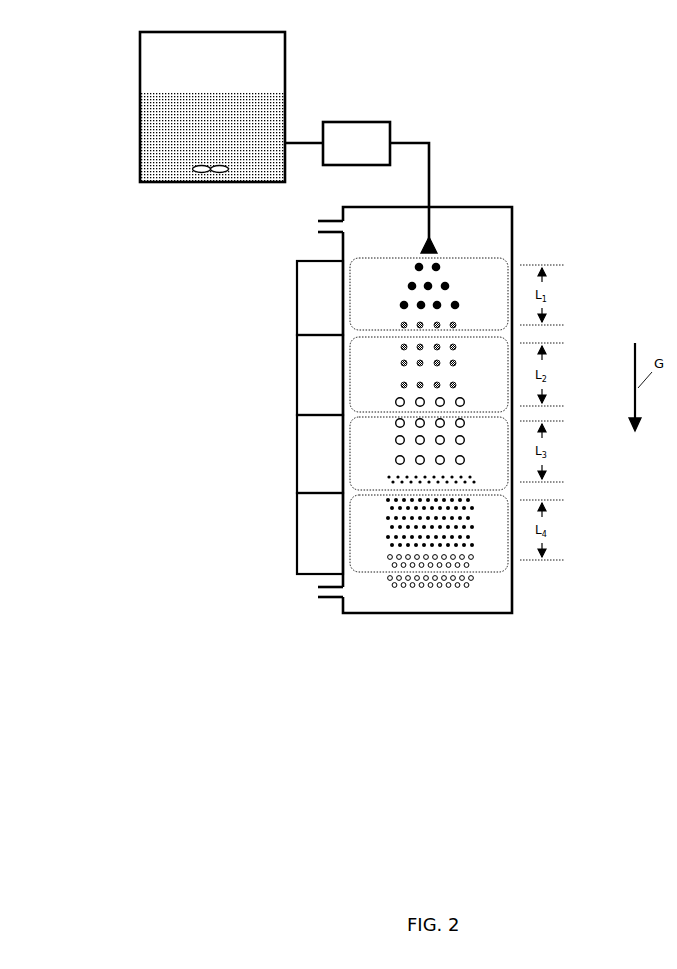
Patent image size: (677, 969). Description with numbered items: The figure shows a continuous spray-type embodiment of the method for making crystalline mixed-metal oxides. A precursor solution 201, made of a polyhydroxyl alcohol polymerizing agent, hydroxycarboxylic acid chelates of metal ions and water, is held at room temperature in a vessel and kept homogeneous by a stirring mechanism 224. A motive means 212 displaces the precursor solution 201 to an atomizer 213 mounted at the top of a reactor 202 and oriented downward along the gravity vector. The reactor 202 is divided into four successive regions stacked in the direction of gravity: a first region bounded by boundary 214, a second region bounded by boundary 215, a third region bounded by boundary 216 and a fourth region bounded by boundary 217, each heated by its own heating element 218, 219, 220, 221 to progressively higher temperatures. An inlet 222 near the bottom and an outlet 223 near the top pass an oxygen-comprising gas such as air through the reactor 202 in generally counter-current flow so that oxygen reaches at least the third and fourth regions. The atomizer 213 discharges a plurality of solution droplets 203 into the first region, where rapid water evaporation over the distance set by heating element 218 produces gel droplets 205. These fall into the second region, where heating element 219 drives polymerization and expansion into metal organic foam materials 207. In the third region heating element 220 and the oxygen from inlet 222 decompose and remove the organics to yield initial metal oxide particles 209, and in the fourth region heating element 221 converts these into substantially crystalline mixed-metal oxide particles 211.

The precursor solution 201 is at (163, 131).
The stirring mechanism 224 is at (221, 165).
The motive means 212 is at (356, 143).
The atomizer 213 is at (437, 250).
The reactor 202 is at (514, 226).
The outlet 223 is at (326, 220).
The inlet 222 is at (330, 600).
The heating element 218 is at (320, 298).
The heating element 219 is at (320, 375).
The heating element 220 is at (320, 454).
The heating element 221 is at (320, 533).
The boundary 214 is at (465, 268).
The boundary 215 is at (465, 345).
The boundary 216 is at (465, 423).
The boundary 217 is at (470, 498).
The solution droplets 203 is at (408, 268).
The gel droplets 205 is at (394, 326).
The metal organic foam materials 207 is at (390, 401).
The initial metal oxide particles 209 is at (384, 479).
The substantially crystalline mixed-metal oxide particles 211 is at (382, 549).